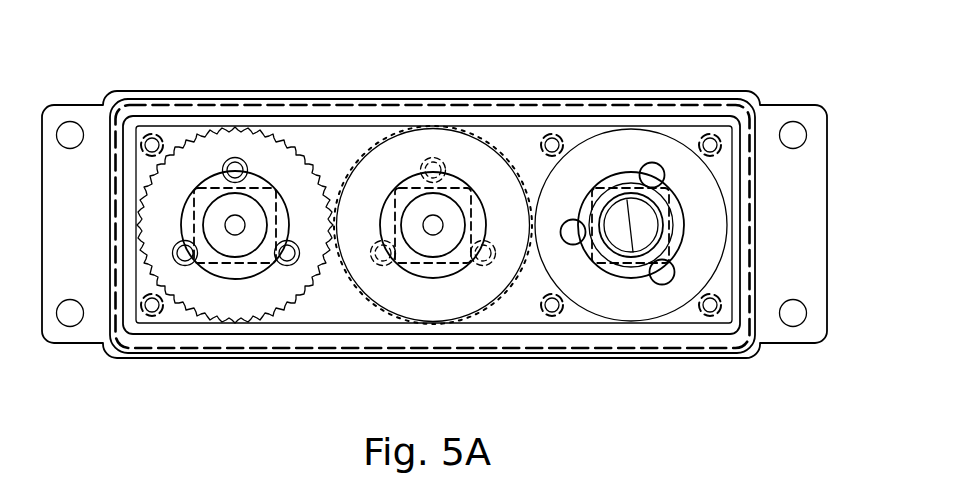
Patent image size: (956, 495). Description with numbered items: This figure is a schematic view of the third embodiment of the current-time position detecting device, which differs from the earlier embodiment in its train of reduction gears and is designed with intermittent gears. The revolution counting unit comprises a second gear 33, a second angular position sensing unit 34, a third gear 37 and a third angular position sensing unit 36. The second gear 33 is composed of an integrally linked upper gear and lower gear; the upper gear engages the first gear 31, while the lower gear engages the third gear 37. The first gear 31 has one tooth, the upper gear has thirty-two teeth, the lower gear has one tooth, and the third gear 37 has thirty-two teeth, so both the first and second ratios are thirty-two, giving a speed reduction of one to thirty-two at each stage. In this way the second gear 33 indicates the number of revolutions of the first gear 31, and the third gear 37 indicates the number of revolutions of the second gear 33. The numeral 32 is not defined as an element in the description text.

The first gear 31 is at (702, 185).
The connector socket 32 is at (625, 186).
The second gear 33 is at (427, 143).
The second angular position sensing unit 34 is at (465, 187).
The third angular position sensing unit 36 is at (217, 177).
The third gear 37 is at (253, 143).